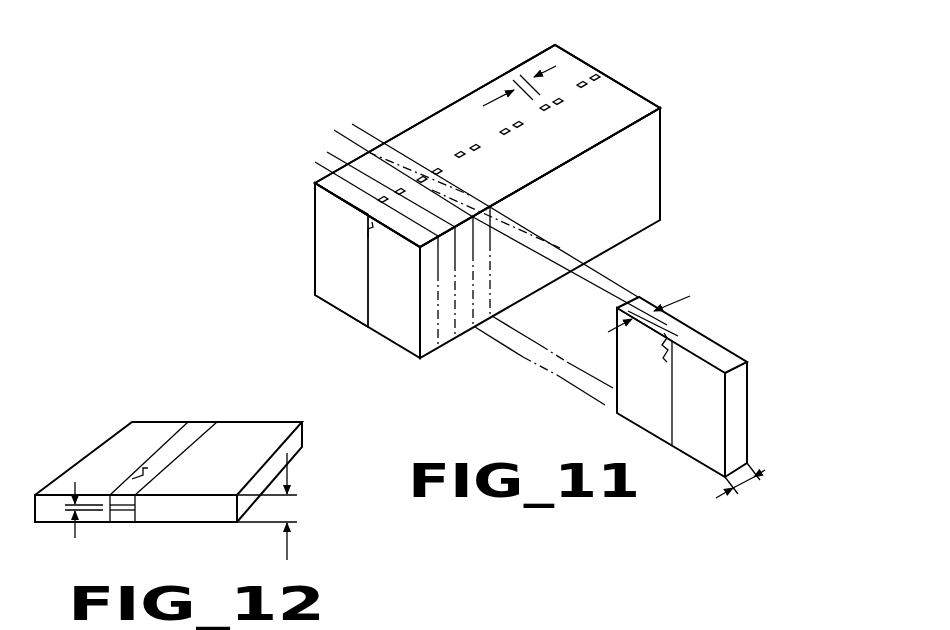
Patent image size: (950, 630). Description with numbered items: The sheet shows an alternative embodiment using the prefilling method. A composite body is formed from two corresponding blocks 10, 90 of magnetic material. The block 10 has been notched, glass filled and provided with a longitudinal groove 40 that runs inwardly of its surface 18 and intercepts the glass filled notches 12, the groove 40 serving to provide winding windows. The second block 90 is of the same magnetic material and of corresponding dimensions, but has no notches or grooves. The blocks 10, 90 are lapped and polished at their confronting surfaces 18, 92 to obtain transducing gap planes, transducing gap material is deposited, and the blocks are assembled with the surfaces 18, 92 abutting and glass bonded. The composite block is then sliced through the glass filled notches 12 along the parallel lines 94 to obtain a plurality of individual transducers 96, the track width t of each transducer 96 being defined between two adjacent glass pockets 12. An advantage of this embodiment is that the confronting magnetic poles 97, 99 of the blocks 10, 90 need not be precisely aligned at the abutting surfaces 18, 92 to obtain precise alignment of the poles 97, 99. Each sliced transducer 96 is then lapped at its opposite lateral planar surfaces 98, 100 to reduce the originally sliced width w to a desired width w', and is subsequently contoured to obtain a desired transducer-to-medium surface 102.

In FIG. 11, the block 10 is at (575, 67).
In FIG. 11, the second block 90 is at (637, 103).
In FIG. 11, the surface 18 is at (368, 316).
In FIG. 11, the confronting surface 92 is at (344, 276).
In FIG. 11, the parallel lines 94 is at (355, 133).
In FIG. 11, the glass filled notches 12 is at (500, 132).
In FIG. 11, the longitudinal groove 40 is at (366, 231).
In FIG. 12, the longitudinal groove 40 is at (148, 468).
In FIG. 11, the transducer 96 is at (701, 306).
In FIG. 11, the lateral planar surface 98 is at (613, 358).
In FIG. 11, the lateral planar surface 100 is at (750, 360).
In FIG. 12, the transducer-to-medium surface 102 is at (50, 515).
In FIG. 12, the magnetic pole 99 is at (135, 508).
In FIG. 12, the magnetic pole 97 is at (123, 523).